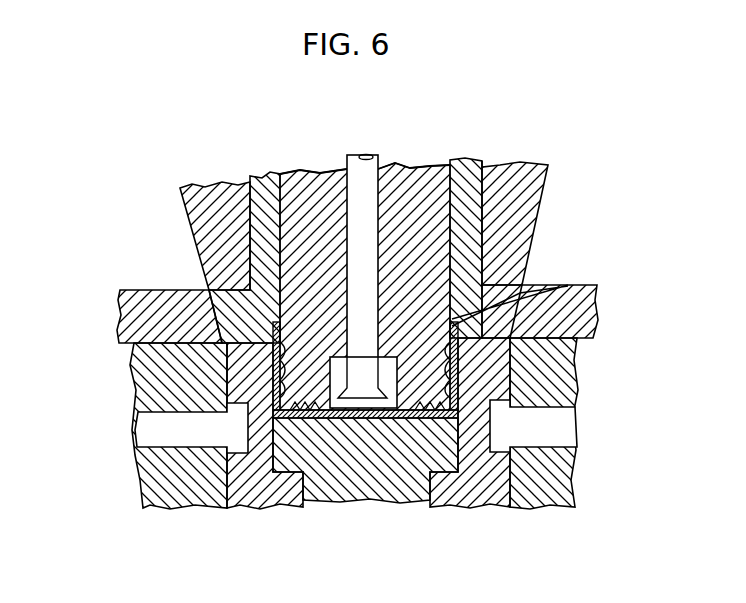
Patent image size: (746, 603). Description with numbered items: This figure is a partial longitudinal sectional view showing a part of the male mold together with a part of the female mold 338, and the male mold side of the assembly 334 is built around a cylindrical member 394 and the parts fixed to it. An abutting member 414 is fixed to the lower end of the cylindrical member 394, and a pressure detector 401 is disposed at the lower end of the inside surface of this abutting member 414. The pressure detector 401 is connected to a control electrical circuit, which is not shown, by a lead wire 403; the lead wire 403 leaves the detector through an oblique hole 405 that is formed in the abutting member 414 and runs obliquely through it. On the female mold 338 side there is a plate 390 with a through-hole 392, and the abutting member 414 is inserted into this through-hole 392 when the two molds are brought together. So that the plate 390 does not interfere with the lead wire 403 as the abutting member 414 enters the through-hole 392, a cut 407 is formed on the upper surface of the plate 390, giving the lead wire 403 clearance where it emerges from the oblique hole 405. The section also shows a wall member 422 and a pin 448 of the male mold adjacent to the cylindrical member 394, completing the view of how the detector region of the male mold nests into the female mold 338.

The assembly 334 is at (150, 224).
The female mold 338 is at (104, 328).
The plate 390 is at (170, 289).
The through-hole 392 is at (224, 316).
The cylindrical member 394 is at (177, 218).
The pressure detector 401 is at (282, 331).
The lead wire 403 is at (488, 261).
The oblique hole 405 is at (500, 305).
The cut 407 is at (597, 285).
The abutting member 414 is at (520, 247).
The wall member 422 is at (463, 190).
The pin 448 is at (349, 204).